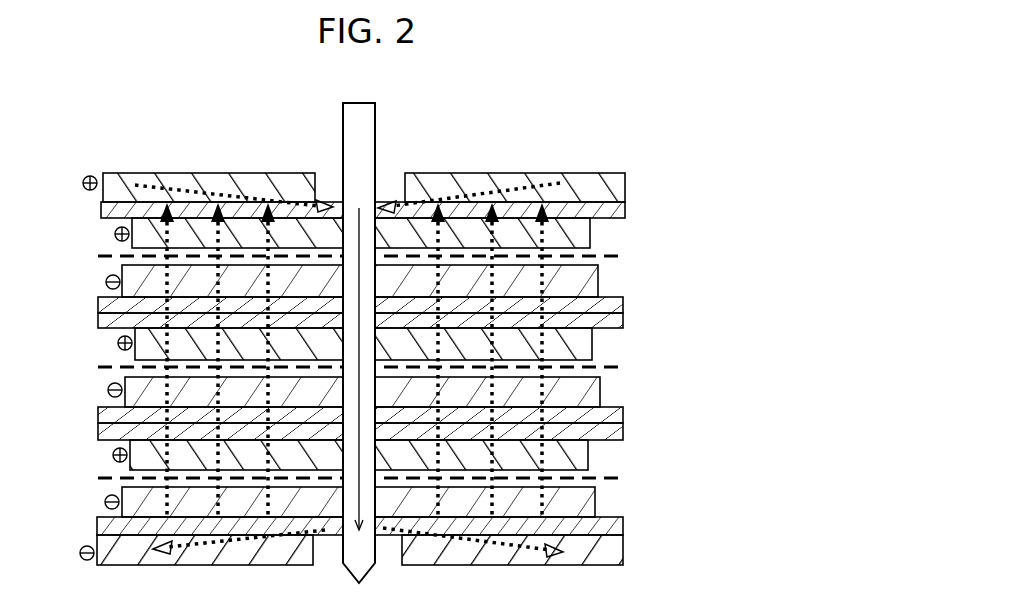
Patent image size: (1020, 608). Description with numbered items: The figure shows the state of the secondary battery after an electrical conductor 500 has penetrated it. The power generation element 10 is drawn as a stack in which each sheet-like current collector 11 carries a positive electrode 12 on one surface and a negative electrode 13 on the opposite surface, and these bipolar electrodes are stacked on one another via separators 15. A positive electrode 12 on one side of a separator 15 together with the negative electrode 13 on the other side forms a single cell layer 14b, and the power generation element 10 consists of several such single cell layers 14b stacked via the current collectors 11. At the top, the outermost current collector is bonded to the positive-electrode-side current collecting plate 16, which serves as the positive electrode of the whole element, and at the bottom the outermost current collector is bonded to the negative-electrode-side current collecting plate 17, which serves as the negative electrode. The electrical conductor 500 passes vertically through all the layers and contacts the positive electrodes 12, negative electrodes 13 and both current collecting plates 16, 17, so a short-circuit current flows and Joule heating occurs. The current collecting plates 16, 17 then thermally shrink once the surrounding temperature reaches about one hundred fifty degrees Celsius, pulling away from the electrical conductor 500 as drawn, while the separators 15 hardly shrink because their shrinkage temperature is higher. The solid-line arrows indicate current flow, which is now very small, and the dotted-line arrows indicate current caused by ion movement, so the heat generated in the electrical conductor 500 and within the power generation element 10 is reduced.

The power generation element 10 is at (667, 408).
The current collector 11 is at (624, 300).
The positive electrode 12 is at (580, 235).
The negative electrode 13 is at (592, 277).
The single cell layer 14b is at (700, 221).
The separator 15 is at (620, 258).
The positive-electrode-side current collecting plate 16 is at (618, 181).
The negative-electrode-side current collecting plate 17 is at (623, 563).
The electrical conductor 500 is at (370, 115).